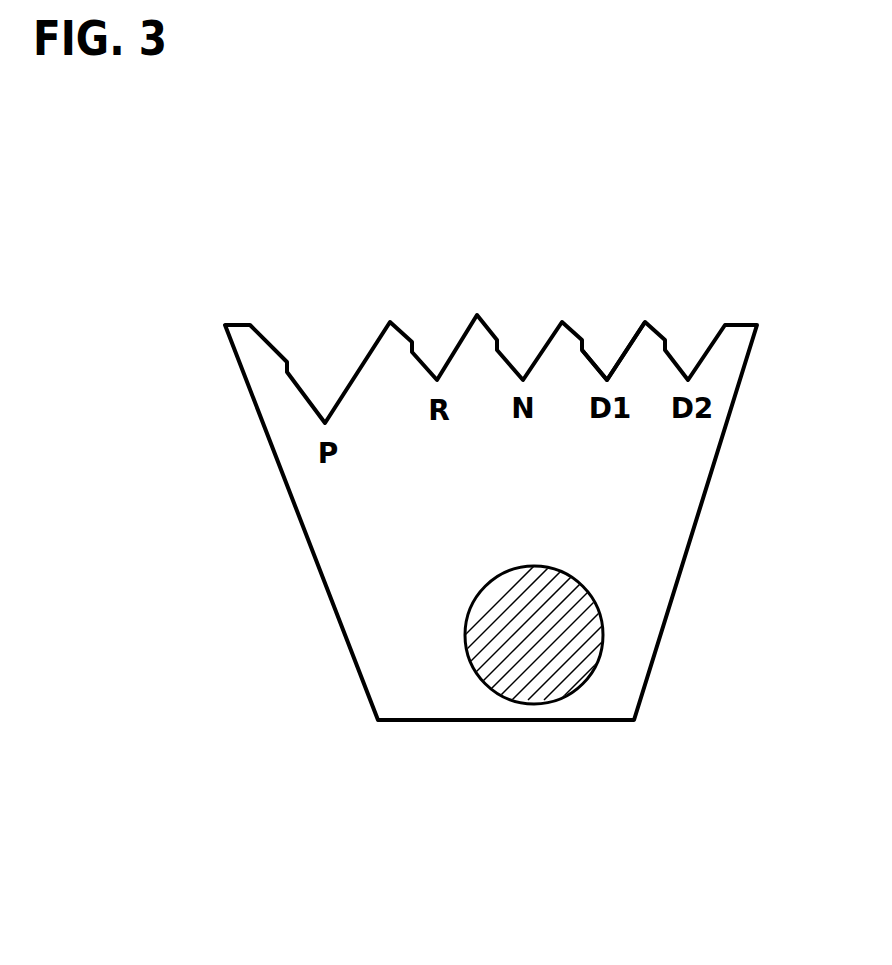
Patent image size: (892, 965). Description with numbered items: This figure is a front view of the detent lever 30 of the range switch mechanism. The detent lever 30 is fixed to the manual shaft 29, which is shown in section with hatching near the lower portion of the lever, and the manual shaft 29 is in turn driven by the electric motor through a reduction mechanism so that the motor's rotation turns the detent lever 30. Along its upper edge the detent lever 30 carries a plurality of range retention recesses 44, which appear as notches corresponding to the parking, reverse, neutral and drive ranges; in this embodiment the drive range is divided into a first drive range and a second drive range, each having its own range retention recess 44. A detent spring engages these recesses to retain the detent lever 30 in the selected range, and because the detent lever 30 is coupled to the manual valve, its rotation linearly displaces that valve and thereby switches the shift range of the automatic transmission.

The detent lever 30 is at (367, 512).
The range retention recess 44 is at (607, 378).
The manual shaft 29 is at (472, 672).